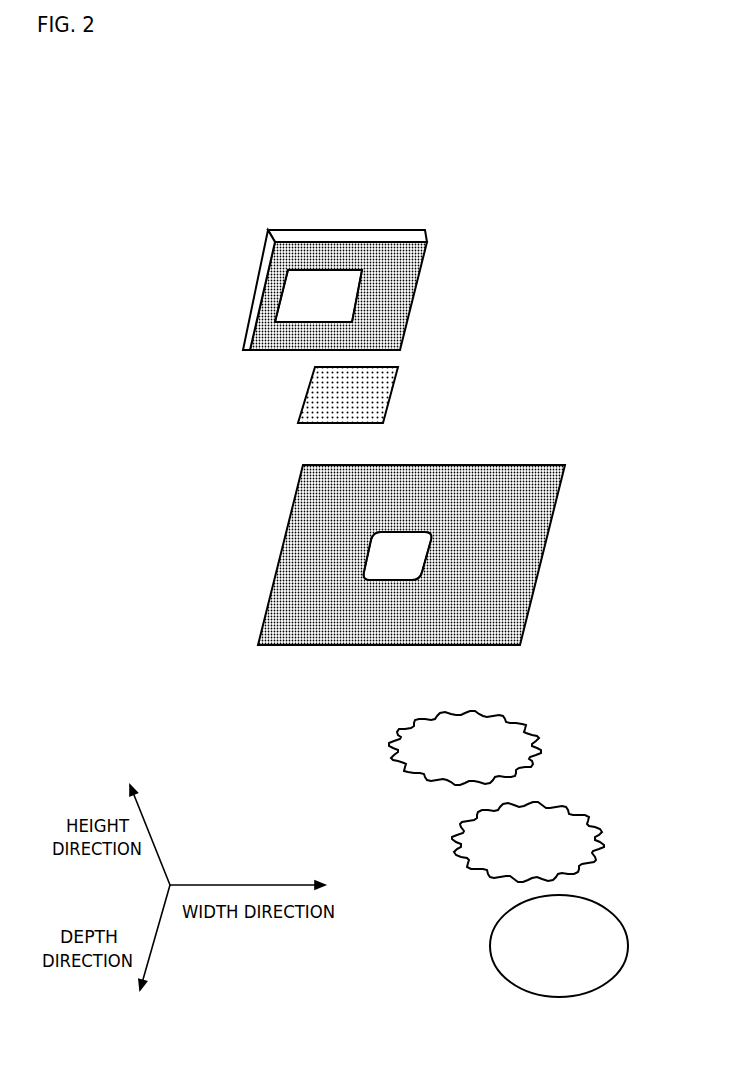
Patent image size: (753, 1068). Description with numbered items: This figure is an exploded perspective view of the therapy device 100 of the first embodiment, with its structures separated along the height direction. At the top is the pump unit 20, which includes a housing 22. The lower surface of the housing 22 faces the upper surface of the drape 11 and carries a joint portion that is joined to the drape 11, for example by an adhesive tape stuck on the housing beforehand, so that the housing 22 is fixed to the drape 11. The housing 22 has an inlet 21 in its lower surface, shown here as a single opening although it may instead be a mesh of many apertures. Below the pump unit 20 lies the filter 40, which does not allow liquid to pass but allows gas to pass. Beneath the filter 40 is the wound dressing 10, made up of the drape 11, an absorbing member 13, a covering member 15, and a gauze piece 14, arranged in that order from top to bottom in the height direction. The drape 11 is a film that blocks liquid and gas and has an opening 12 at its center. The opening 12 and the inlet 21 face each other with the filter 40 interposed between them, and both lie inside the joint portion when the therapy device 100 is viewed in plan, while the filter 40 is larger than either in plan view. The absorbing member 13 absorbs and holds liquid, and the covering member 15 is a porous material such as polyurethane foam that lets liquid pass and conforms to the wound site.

The therapy device 100 is at (533, 133).
The pump unit 20 is at (438, 155).
The housing 22 is at (427, 230).
The inlet 21 is at (338, 297).
The filter 40 is at (392, 393).
The wound dressing 10 is at (587, 455).
The drape 11 is at (507, 627).
The opening 12 is at (420, 558).
The absorbing member 13 is at (513, 738).
The covering member 15 is at (580, 853).
The gauze piece 14 is at (602, 963).